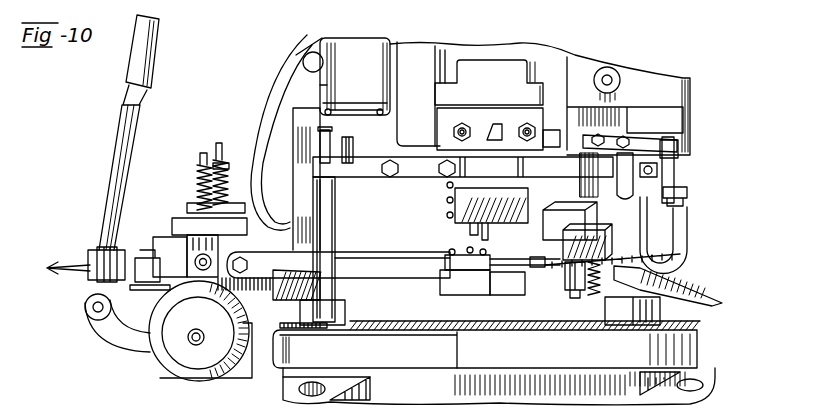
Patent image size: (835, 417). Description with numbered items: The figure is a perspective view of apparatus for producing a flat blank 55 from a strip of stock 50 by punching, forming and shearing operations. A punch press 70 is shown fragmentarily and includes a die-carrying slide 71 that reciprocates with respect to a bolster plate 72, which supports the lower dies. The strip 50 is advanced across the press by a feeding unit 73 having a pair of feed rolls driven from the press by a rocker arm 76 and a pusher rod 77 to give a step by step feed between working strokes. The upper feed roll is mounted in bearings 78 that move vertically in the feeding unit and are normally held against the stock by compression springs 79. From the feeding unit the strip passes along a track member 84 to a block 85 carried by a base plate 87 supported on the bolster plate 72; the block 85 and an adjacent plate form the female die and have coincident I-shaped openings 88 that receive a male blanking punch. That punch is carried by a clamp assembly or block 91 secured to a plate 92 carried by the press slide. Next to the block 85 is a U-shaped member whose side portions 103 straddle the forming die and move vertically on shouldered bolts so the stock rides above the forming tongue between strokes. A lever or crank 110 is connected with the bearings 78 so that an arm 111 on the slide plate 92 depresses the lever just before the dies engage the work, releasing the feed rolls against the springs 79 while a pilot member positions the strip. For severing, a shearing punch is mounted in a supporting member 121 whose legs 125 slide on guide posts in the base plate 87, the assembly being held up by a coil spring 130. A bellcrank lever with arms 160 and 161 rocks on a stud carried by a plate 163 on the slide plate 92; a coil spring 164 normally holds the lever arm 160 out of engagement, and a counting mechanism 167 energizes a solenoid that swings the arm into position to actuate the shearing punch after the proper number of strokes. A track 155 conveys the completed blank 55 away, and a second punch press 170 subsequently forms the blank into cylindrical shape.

The strip of stock 50 is at (70, 263).
The blank 55 is at (692, 264).
The punch press 70 is at (624, 54).
The die-carrying slide 71 is at (447, 100).
The bolster plate 72 is at (700, 347).
The feeding unit 73 is at (162, 212).
The rocker arm 76 is at (128, 333).
The pusher rod 77 is at (118, 158).
The bearings 78 is at (195, 258).
The compression springs 79 is at (200, 188).
The track member 84 is at (412, 281).
The block 85 is at (463, 282).
The base plate 87 is at (690, 306).
The I-shaped openings 88 is at (468, 258).
The clamp assembly or block 91 is at (490, 197).
The plate 92 is at (572, 176).
The side portions 103 is at (500, 282).
The lever or crank 110 is at (280, 268).
The arm 111 is at (320, 240).
The supporting member 121 is at (601, 244).
The legs 125 is at (580, 282).
The coil spring 130 is at (592, 290).
The track 155 is at (712, 290).
The lever arm 160 is at (592, 220).
The lever arm 161 is at (680, 172).
The plate 163 is at (642, 148).
The coil spring 164 is at (686, 198).
The counting mechanism 167 is at (352, 45).
The punch press 170 is at (198, 416).